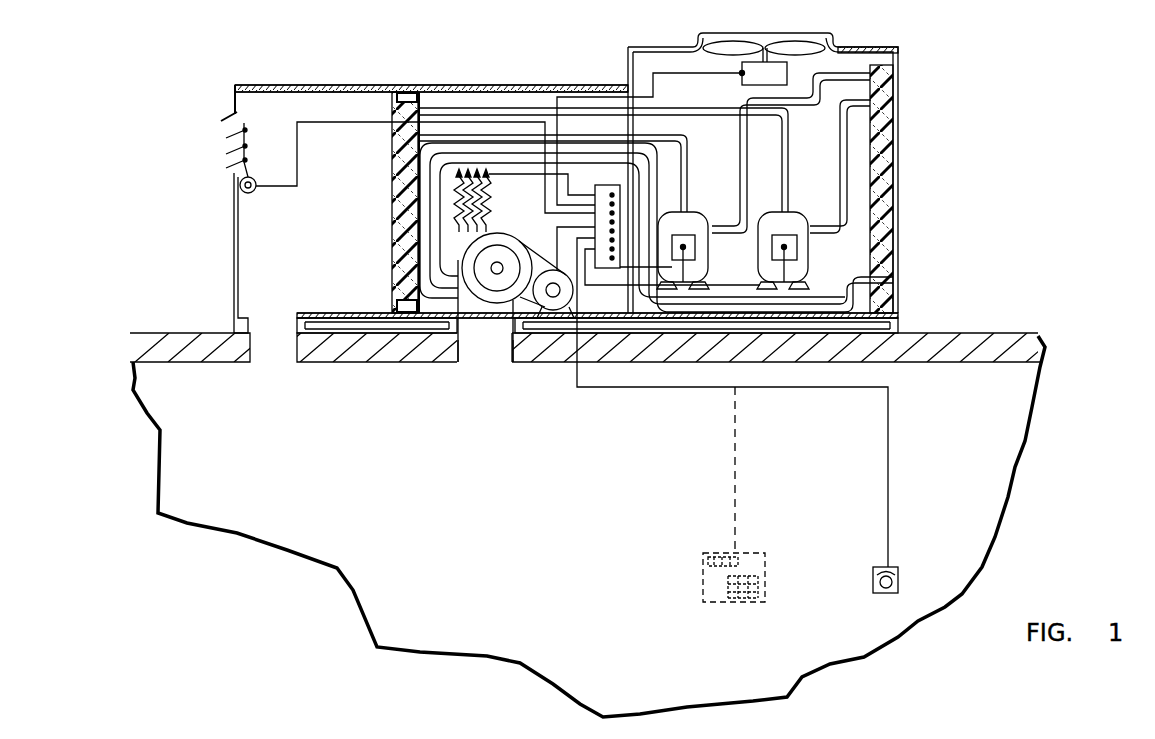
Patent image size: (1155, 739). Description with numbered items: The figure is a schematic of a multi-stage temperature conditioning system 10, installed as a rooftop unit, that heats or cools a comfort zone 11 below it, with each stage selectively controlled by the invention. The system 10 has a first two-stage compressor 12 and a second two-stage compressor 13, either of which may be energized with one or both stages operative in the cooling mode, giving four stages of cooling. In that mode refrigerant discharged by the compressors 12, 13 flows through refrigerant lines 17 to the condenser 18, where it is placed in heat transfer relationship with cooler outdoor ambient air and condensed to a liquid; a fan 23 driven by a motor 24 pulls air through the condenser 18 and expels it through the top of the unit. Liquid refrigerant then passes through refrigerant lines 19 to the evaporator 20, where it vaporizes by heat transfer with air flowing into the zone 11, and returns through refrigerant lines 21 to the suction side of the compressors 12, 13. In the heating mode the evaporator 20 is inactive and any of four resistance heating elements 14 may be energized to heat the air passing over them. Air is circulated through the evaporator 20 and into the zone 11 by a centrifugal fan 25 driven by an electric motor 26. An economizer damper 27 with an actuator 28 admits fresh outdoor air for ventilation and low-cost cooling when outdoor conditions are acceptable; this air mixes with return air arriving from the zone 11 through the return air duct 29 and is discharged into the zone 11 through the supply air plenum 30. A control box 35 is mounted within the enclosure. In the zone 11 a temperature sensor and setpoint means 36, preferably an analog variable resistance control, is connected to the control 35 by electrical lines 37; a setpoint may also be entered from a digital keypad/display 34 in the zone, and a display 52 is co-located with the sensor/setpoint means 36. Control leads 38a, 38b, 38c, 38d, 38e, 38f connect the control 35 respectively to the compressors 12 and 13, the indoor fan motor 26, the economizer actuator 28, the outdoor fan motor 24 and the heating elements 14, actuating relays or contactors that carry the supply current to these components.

The temperature conditioning system 10 is at (476, 80).
The comfort zone 11 is at (575, 530).
The first two-stage compressor 12 is at (712, 244).
The second two-stage compressor 13 is at (802, 252).
The resistance heating elements 14 is at (484, 200).
The refrigerant lines 17 is at (842, 90).
The condenser 18 is at (900, 108).
The refrigerant lines 19 is at (638, 192).
The evaporator 20 is at (390, 203).
The refrigerant lines 21 is at (452, 135).
The fan 23 is at (793, 45).
The motor 24 is at (742, 80).
The centrifugal fan 25 is at (500, 236).
The electric motor 26 is at (540, 320).
The economizer damper 27 is at (230, 152).
The actuator 28 is at (256, 192).
The return air duct 29 is at (272, 362).
The supply air plenum 30 is at (488, 370).
The digital keypad/display 34 is at (768, 570).
The control box 35 is at (610, 275).
The zone sensor/setpoint means 36 is at (873, 580).
The electrical lines 37 is at (668, 390).
The control lead 38a is at (697, 258).
The control lead 38b is at (705, 283).
The control lead 38c is at (557, 255).
The control lead 38d is at (362, 122).
The control lead 38e is at (692, 73).
The control lead 38f is at (538, 186).
The display 52 is at (704, 558).